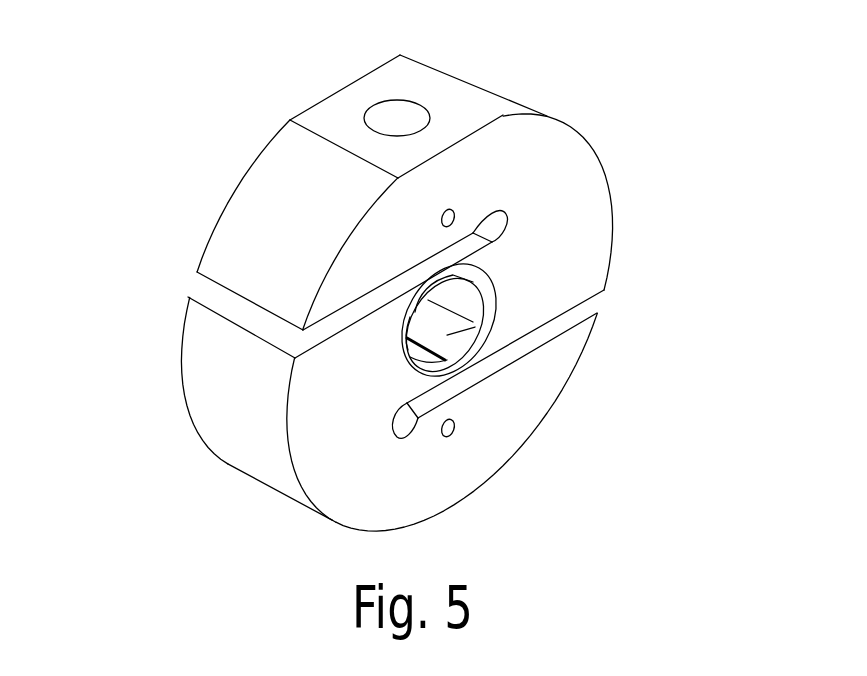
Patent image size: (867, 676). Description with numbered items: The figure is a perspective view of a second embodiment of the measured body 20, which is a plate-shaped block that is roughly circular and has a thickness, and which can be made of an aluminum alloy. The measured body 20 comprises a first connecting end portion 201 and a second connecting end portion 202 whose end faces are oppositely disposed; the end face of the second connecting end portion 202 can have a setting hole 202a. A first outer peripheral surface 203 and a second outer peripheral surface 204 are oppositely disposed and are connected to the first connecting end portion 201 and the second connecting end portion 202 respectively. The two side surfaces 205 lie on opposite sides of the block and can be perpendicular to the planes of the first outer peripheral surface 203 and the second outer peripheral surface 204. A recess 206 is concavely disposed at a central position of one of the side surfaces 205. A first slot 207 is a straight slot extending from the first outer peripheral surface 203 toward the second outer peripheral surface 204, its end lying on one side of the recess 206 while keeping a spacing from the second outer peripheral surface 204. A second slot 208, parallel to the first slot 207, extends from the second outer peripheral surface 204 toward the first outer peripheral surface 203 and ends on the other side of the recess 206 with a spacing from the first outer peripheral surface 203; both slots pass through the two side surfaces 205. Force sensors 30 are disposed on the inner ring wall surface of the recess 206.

The measured body 20 is at (217, 137).
The first connecting end portion 201 is at (448, 502).
The second connecting end portion 202 is at (340, 112).
The setting hole 202a is at (390, 108).
The first outer peripheral surface 203 is at (211, 347).
The second outer peripheral surface 204 is at (488, 95).
The side surface 205 is at (572, 226).
The recess 206 is at (447, 337).
The first slot 207 is at (214, 297).
The second slot 208 is at (578, 317).
The force sensor 30 is at (463, 298).